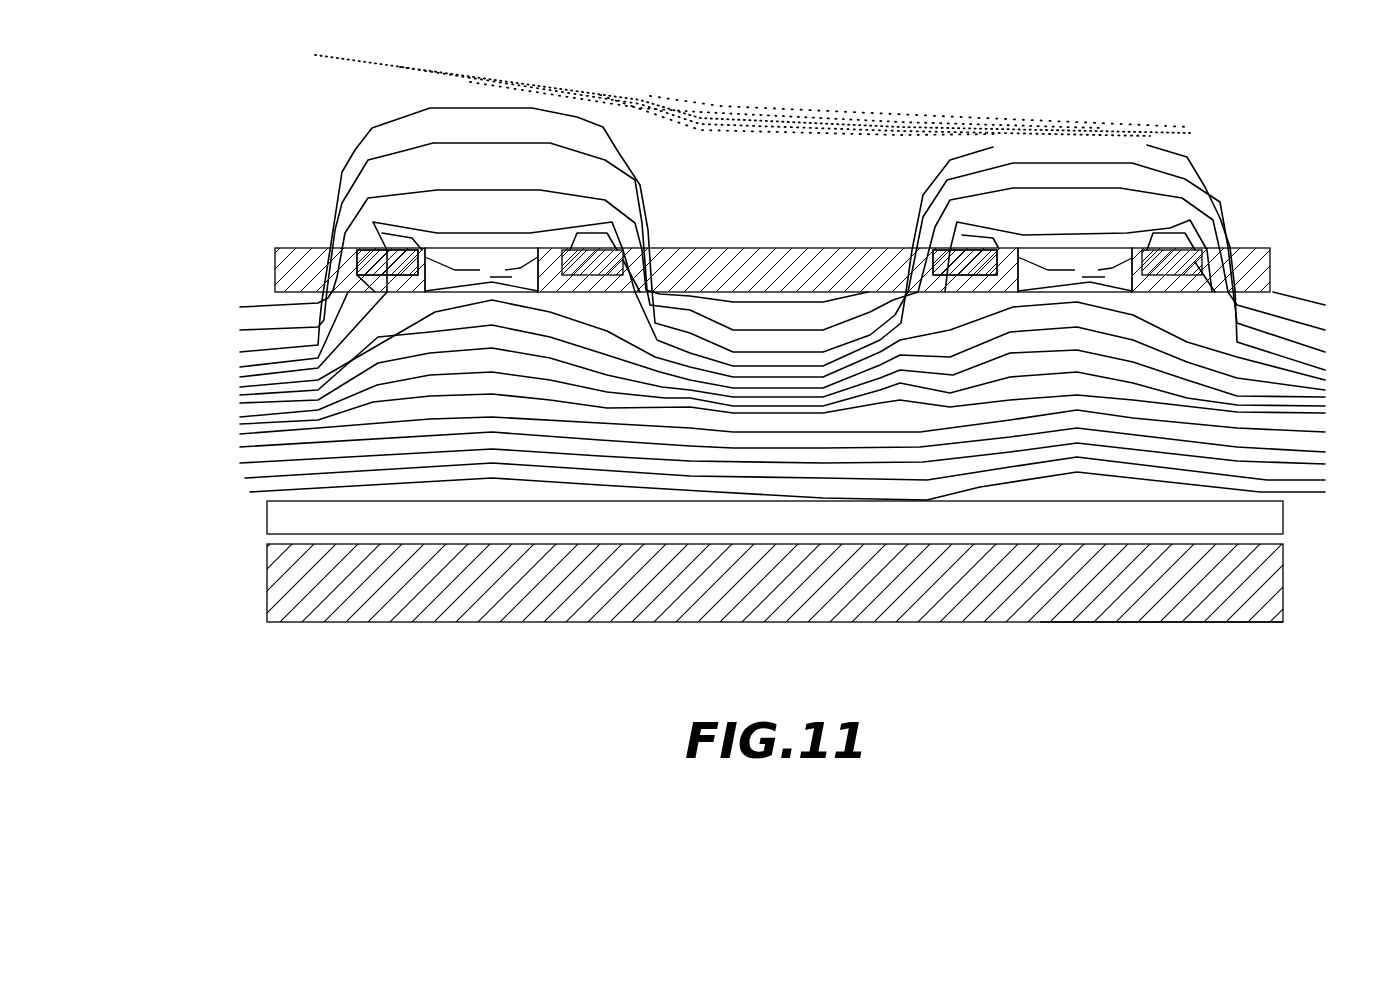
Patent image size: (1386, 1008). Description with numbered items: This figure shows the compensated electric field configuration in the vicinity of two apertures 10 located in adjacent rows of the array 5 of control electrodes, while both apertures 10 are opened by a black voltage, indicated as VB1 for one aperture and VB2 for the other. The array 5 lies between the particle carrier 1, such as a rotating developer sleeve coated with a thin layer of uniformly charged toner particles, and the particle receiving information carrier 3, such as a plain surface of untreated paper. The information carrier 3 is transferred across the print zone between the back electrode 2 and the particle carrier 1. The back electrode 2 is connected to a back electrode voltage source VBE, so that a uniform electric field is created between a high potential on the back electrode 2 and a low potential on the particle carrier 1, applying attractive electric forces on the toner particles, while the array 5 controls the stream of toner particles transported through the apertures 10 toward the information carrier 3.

The particle carrier 1 is at (695, 113).
The back electrode 2 is at (286, 589).
The information carrier 3 is at (282, 523).
The array of control electrodes 5 is at (1272, 248).
The apertures 10 is at (778, 270).
The black voltage applied to first aperture VB1 is at (980, 270).
The black voltage applied to second aperture VB2 is at (390, 250).
The back electrode voltage source VBE is at (1042, 622).